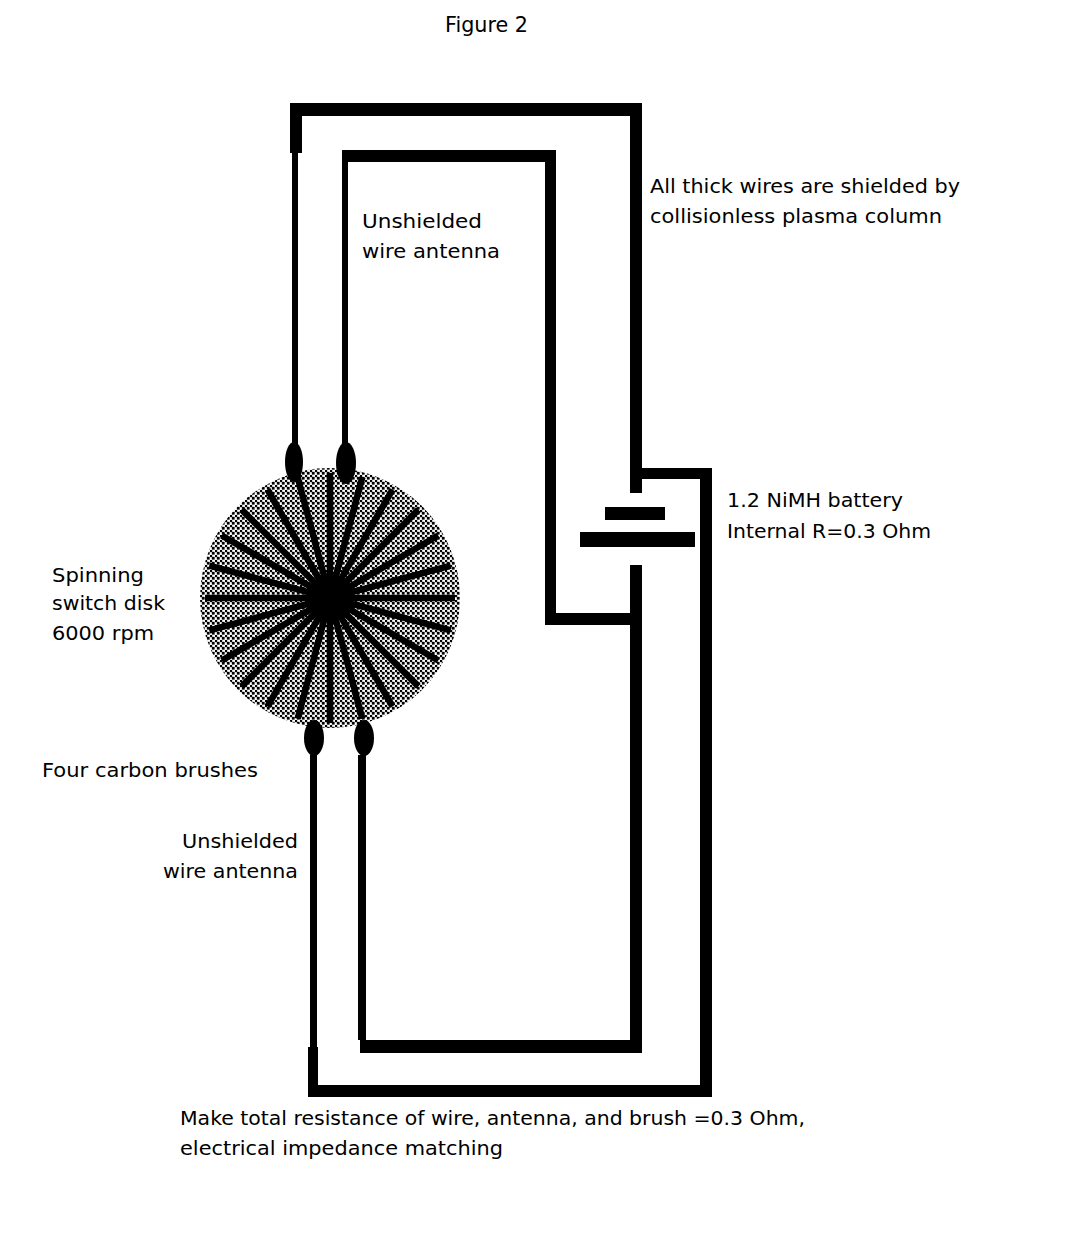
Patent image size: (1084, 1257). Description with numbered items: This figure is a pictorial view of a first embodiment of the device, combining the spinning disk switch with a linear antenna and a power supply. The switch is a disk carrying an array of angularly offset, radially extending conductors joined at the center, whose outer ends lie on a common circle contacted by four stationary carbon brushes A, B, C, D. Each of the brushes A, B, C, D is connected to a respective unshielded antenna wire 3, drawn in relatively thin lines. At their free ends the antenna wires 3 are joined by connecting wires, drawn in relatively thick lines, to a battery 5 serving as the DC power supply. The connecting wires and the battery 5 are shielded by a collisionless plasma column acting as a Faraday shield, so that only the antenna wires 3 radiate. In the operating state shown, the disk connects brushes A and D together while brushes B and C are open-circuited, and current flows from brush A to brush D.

The unshielded antenna wire 3 is at (343, 380).
The battery 5 is at (678, 495).
The brush A is at (281, 462).
The brush B is at (356, 461).
The brush C is at (296, 741).
The brush D is at (378, 743).